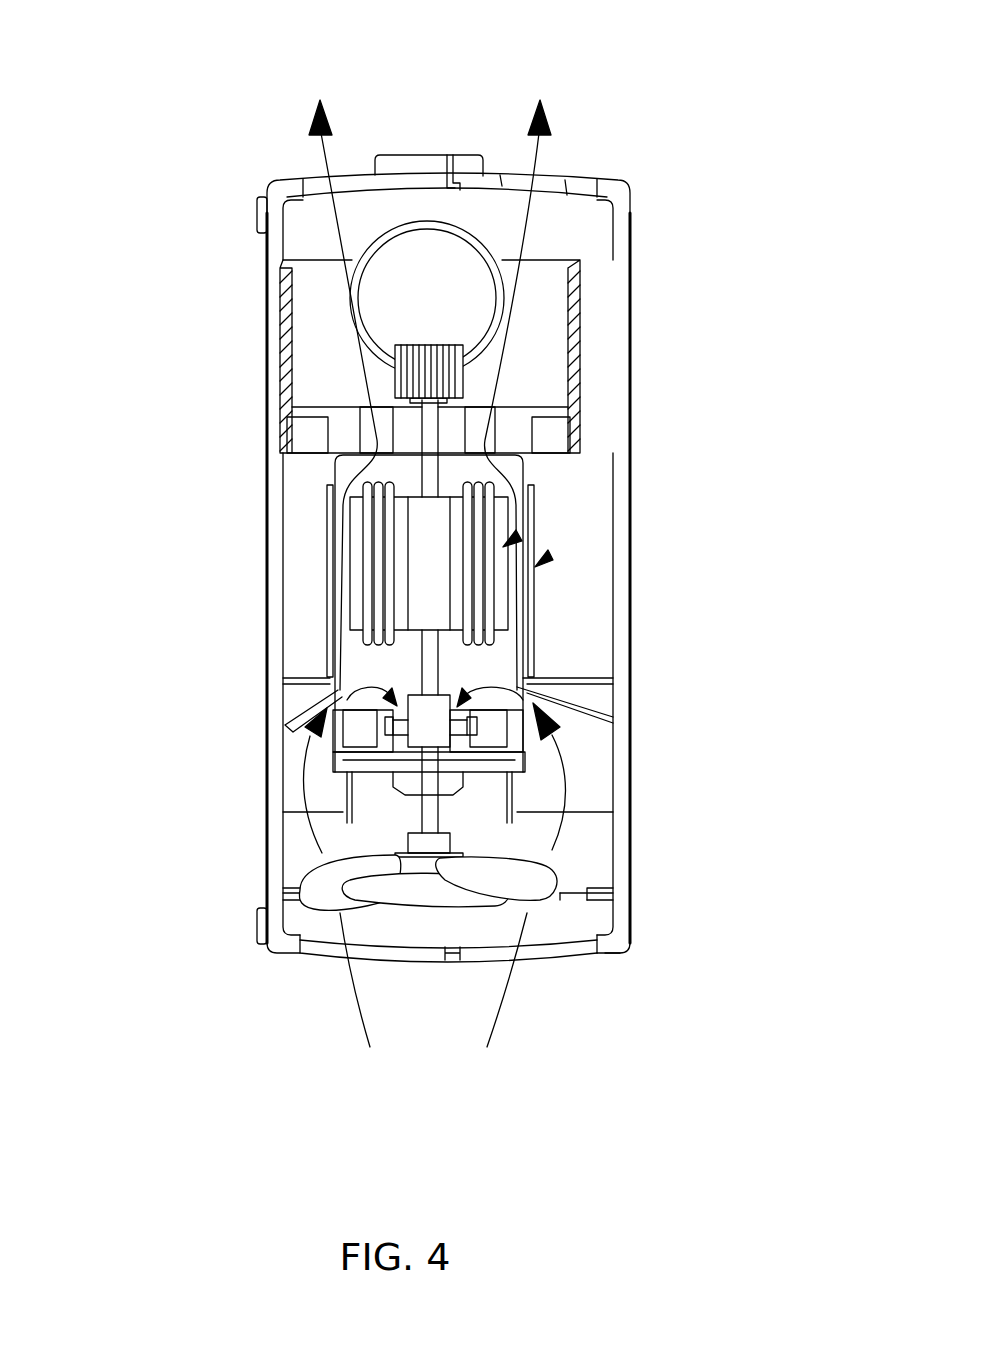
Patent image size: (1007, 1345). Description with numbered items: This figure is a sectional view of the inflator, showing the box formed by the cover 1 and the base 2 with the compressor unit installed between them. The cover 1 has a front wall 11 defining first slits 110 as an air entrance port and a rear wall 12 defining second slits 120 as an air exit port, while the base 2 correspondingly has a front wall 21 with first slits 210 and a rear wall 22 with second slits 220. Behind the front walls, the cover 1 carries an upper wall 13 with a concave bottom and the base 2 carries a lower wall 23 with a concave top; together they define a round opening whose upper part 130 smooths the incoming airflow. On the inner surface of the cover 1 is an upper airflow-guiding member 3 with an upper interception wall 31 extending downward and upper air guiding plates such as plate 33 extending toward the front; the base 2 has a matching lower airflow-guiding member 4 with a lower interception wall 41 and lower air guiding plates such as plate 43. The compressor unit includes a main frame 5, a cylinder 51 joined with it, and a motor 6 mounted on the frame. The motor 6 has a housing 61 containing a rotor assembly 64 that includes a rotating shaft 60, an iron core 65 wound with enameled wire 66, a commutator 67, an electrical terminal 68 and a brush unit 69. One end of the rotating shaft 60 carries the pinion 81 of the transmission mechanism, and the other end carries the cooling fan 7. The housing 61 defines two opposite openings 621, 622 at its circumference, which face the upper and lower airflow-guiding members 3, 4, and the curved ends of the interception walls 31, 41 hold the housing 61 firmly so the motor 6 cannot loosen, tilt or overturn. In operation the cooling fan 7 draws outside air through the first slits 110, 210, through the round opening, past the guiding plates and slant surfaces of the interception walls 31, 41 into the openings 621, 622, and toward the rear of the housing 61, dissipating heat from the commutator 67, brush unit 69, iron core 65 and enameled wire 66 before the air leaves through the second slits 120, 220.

The cover 1 is at (632, 205).
The front wall 11 is at (603, 955).
The first slits 110 is at (553, 948).
The rear wall 12 is at (502, 173).
The second slits 120 is at (568, 187).
The upper wall 13 is at (600, 895).
The upper part 130 is at (565, 892).
The base 2 is at (267, 197).
The front wall 21 is at (290, 953).
The first slits 210 is at (412, 953).
The rear wall 22 is at (410, 177).
The second slits 220 is at (348, 185).
The lower wall 23 is at (293, 888).
The upper airflow-guiding member 3 is at (588, 683).
The upper interception wall 31 is at (577, 705).
The upper air guiding plate 33 is at (590, 787).
The lower airflow-guiding member 4 is at (297, 687).
The lower interception wall 41 is at (287, 710).
The lower air guiding plate 43 is at (298, 783).
The main frame 5 is at (340, 428).
The cylinder 51 is at (455, 225).
The motor 6 is at (540, 562).
The rotating shaft 60 is at (430, 480).
The housing 61 is at (510, 540).
The opening 622 is at (340, 697).
The opening 621 is at (517, 722).
The rotor assembly 64 is at (529, 472).
The iron core 65 is at (357, 547).
The enameled wire 66 is at (375, 603).
The commutator 67 is at (430, 707).
The electrical terminal 68 is at (508, 778).
The brush unit 69 is at (457, 735).
The cooling fan 7 is at (537, 873).
The pinion 81 is at (417, 367).